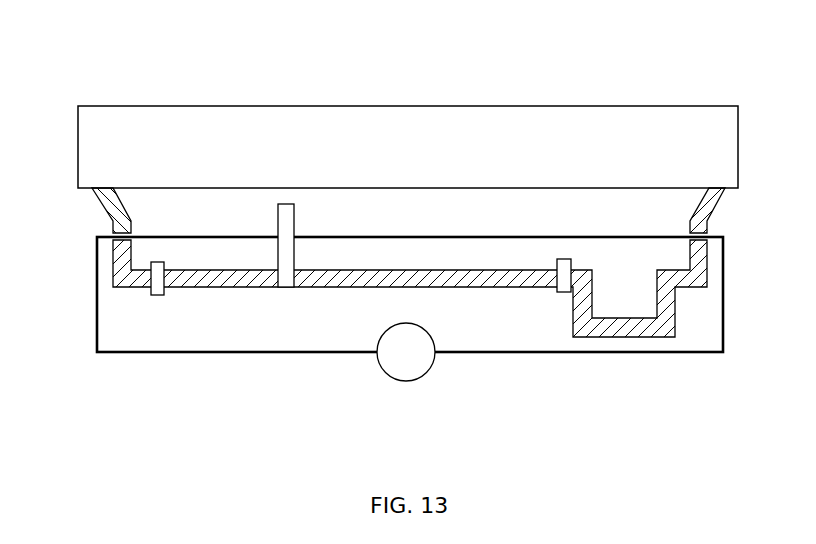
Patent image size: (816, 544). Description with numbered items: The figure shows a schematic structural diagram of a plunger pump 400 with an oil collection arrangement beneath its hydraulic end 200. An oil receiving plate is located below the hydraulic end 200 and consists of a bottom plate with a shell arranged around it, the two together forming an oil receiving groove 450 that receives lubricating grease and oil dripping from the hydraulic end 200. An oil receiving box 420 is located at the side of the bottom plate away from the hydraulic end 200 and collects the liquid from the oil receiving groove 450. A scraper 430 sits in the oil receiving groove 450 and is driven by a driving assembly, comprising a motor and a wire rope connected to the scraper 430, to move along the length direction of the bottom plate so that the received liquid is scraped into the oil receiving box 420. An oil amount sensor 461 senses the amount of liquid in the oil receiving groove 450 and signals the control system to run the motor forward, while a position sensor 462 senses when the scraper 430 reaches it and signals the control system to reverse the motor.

The hydraulic end 200 is at (532, 145).
The oil receiving groove 450 is at (213, 220).
The plunger pump 400 is at (410, 359).
The oil receiving box 420 is at (628, 307).
The scraper 430 is at (284, 253).
The oil amount sensor 461 is at (156, 283).
The position sensor 462 is at (564, 279).